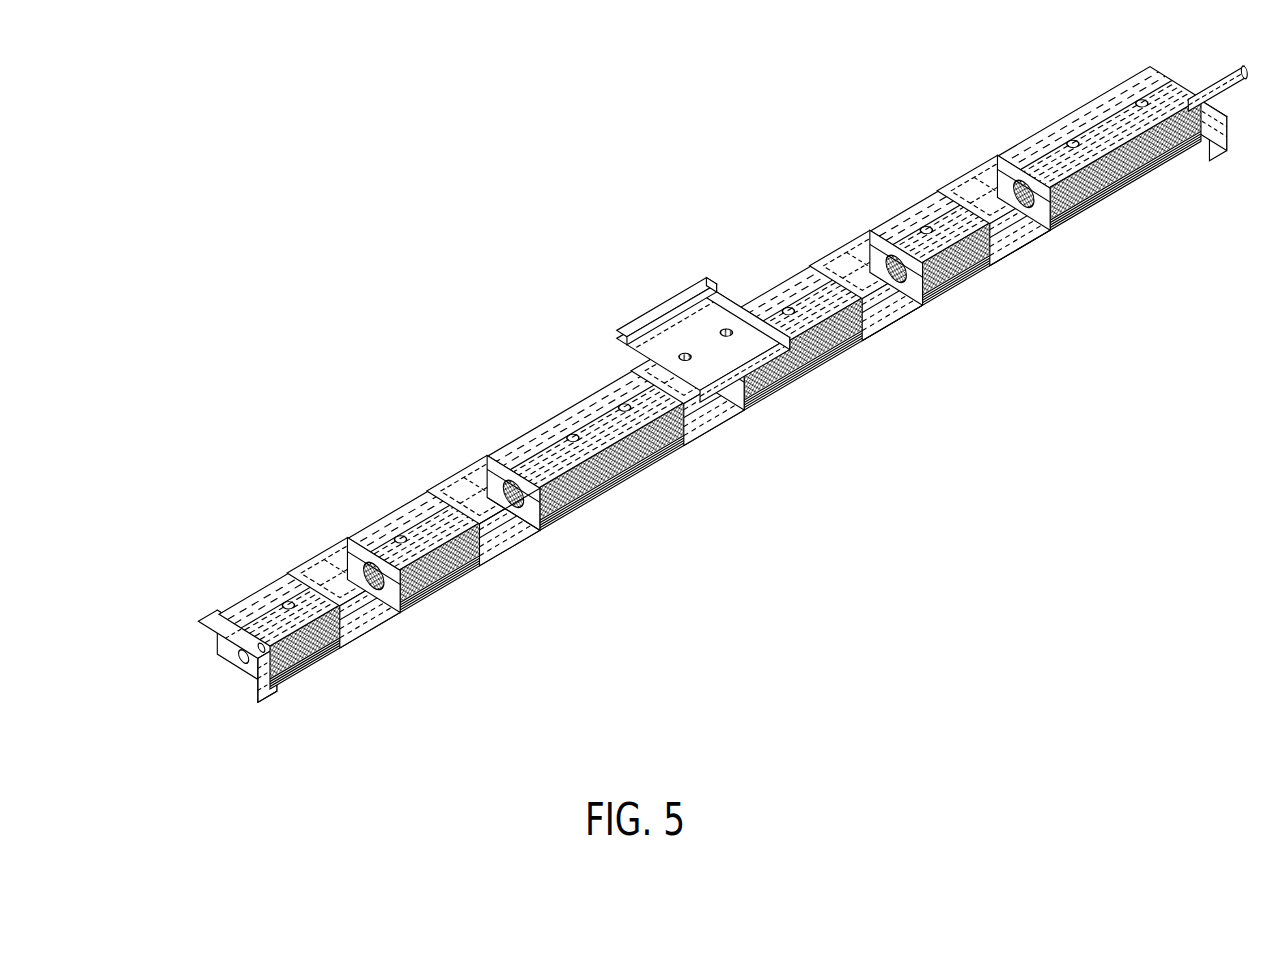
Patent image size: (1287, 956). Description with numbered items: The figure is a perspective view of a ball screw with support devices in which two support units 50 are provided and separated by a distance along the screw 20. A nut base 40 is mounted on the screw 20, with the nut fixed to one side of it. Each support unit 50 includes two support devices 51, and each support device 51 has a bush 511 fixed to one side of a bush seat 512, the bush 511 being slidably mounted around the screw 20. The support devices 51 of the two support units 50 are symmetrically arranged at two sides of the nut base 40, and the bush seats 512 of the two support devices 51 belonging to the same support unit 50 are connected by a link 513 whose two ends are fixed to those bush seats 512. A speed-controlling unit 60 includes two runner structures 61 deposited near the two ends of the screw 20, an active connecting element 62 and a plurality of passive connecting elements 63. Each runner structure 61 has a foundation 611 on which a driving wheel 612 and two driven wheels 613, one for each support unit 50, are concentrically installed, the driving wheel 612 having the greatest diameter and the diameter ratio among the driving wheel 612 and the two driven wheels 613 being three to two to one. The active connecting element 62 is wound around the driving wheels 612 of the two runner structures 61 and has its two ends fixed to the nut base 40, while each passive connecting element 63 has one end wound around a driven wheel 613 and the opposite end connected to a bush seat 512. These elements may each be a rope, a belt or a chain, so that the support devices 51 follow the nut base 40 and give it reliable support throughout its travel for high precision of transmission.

The screw 20 is at (628, 416).
The nut base 40 is at (678, 292).
The support unit 50 is at (680, 386).
The support device 51 is at (680, 386).
The bush 511 is at (541, 510).
The bush seat 512 is at (548, 494).
The link 513 is at (880, 330).
The speed-controlling unit 60 is at (706, 417).
The runner structure 61 is at (1206, 152).
The foundation 611 is at (273, 690).
The driving wheel 612 is at (258, 668).
The driven wheel 613 is at (277, 640).
The active connecting element 62 is at (330, 655).
The passive connecting element 63 is at (347, 636).